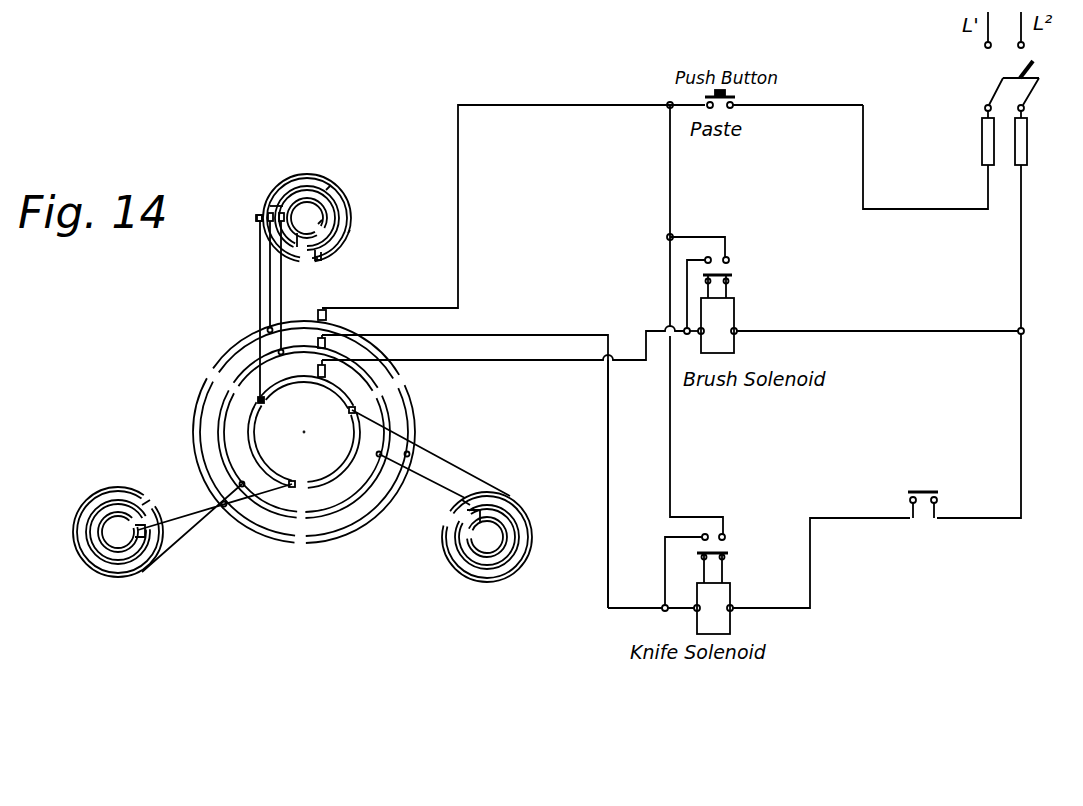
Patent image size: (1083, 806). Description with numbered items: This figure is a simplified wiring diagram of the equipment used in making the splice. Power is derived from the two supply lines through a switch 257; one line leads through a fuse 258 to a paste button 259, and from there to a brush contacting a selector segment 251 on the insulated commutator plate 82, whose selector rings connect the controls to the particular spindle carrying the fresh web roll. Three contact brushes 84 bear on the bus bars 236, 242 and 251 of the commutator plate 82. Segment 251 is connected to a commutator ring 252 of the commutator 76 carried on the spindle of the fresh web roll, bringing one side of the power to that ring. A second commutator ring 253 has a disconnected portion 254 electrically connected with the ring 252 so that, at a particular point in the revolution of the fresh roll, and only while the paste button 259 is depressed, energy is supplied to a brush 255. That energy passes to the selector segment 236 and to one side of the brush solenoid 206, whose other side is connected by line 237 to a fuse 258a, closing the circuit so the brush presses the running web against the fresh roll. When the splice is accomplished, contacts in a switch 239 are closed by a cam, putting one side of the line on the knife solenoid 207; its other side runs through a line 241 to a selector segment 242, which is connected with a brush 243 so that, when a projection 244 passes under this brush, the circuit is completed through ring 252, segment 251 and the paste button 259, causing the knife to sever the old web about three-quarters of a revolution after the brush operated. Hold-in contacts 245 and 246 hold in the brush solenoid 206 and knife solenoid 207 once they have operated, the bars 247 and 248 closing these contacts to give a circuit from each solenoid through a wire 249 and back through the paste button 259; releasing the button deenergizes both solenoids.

The commutator disc 76 is at (302, 378).
The commutator plate 82 is at (313, 449).
The contact brushes 84 is at (328, 317).
The brush solenoid 206 is at (733, 346).
The knife solenoid 207 is at (730, 594).
The selector segment 236 is at (273, 385).
The line 237 is at (922, 332).
The switch 239 is at (925, 494).
The line 241 is at (607, 452).
The selector segment 242 is at (306, 345).
The brush 243 is at (280, 207).
The projection 244 is at (320, 222).
The hold-in contacts 245 is at (733, 262).
The hold-in contacts 246 is at (728, 540).
The bar 247 is at (733, 291).
The bar 248 is at (730, 562).
The wire 249 is at (672, 188).
The selector segment 251 is at (383, 342).
The commutator ring 252 is at (327, 190).
The commutator ring 253 is at (348, 233).
The disconnected portion 254 is at (318, 262).
The brush 255 is at (256, 219).
The switch 257 is at (1036, 96).
The fuse 258 is at (982, 148).
The fuse 258a is at (1027, 152).
The paste button 259 is at (784, 95).